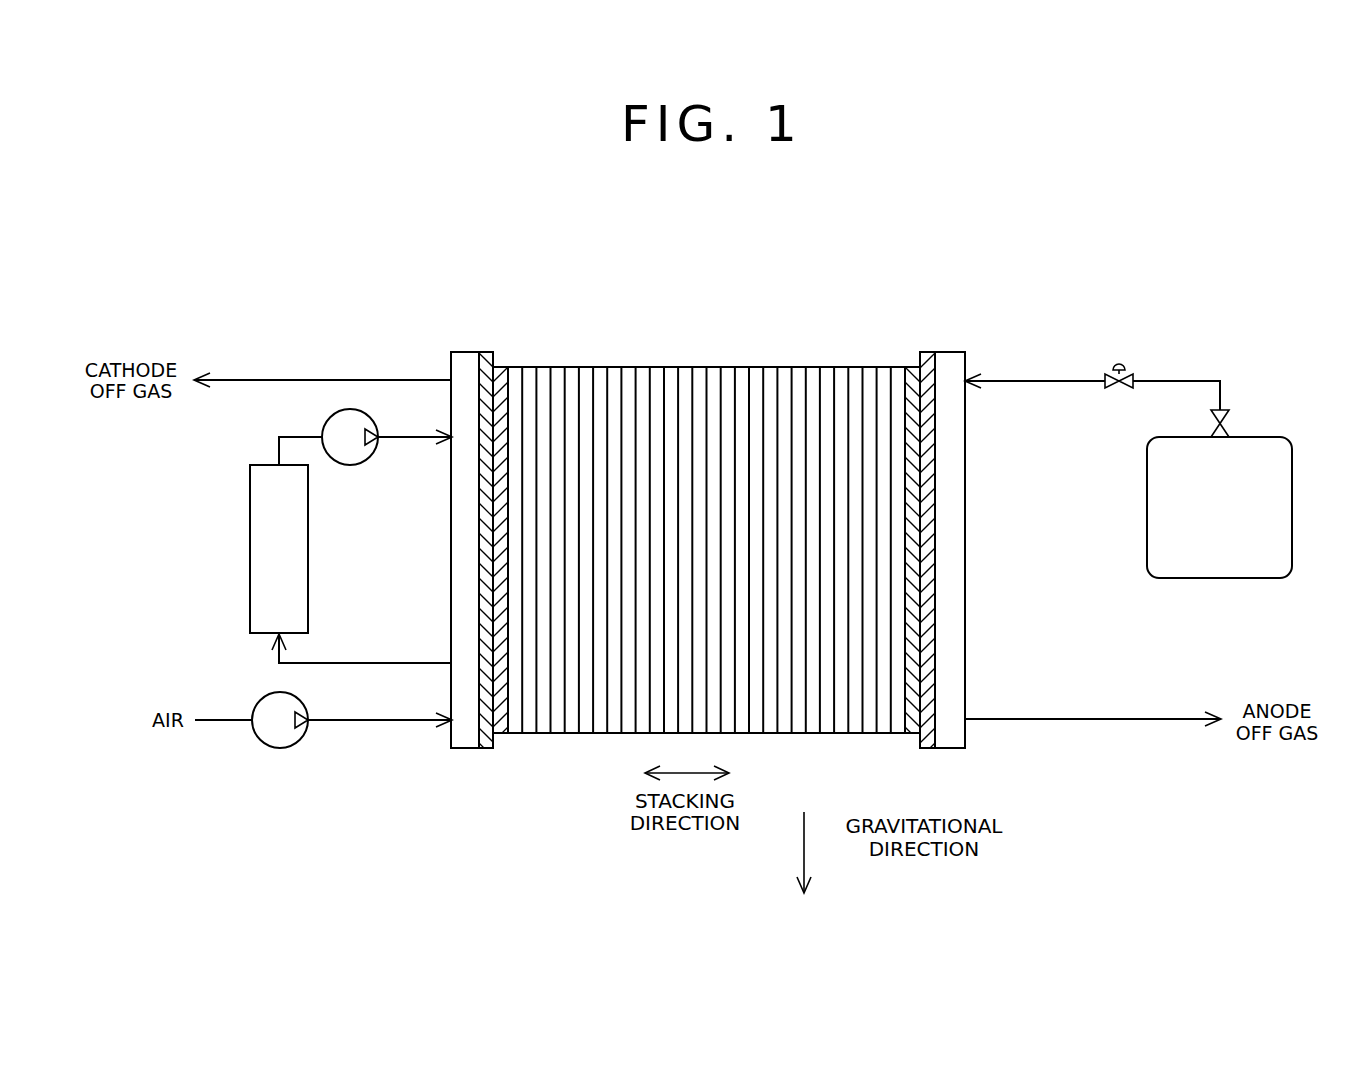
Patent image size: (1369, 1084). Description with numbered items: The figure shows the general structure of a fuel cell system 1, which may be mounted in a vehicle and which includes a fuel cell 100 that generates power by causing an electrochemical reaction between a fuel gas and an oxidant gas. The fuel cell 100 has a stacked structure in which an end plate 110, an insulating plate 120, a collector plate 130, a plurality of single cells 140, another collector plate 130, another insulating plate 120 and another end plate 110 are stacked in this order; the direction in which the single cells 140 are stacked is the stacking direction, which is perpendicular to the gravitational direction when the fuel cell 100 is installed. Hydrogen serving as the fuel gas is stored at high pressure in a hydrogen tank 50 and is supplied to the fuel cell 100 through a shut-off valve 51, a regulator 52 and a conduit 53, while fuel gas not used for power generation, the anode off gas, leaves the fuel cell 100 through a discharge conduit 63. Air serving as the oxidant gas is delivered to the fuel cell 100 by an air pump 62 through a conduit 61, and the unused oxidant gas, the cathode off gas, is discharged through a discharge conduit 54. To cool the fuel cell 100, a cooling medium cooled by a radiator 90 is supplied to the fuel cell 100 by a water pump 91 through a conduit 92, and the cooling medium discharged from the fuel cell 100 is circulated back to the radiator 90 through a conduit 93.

The fuel cell system 1 is at (318, 274).
The fuel cell 100 is at (452, 266).
The end plate 110 is at (473, 352).
The insulating plate 120 is at (486, 352).
The collector plate 130 is at (500, 367).
The single cells 140 is at (718, 364).
The hydrogen tank 50 is at (1292, 505).
The shut-off valve 51 is at (1228, 423).
The regulator 52 is at (1122, 388).
The conduit 53 is at (1078, 381).
The discharge conduit 54 is at (353, 380).
The conduit 61 is at (377, 722).
The air pump 62 is at (280, 749).
The discharge conduit 63 is at (1162, 719).
The radiator 90 is at (250, 552).
The water pump 91 is at (351, 466).
The conduit 92 is at (410, 440).
The conduit 93 is at (338, 663).